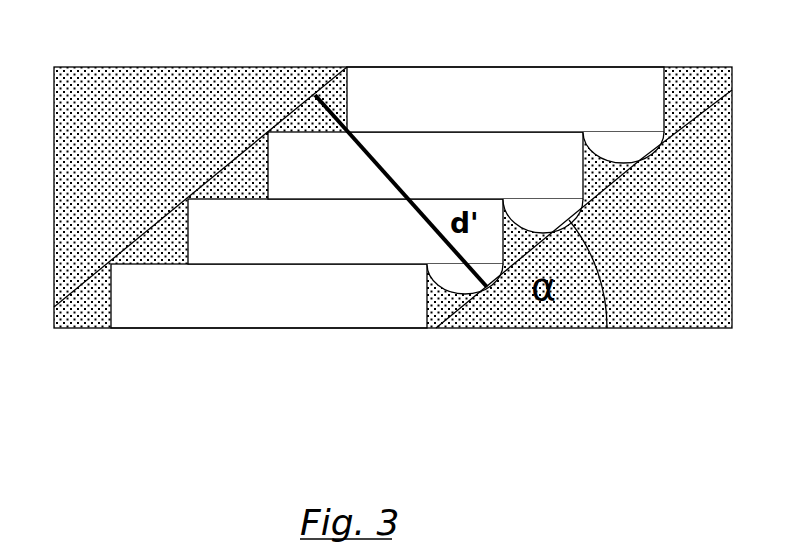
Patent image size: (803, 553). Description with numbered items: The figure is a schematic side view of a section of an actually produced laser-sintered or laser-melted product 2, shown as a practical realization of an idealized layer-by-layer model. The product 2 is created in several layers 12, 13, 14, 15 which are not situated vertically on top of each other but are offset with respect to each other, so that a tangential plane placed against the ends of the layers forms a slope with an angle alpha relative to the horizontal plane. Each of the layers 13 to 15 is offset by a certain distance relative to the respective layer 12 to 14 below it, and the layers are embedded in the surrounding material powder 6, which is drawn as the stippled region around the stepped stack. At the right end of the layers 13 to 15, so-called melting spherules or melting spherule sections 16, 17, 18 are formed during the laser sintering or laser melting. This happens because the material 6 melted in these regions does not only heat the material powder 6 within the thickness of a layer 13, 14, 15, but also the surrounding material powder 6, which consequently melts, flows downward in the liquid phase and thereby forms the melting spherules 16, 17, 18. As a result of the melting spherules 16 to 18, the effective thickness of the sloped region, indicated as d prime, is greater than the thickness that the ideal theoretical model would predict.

The product 2 is at (483, 65).
The material powder 6 is at (114, 140).
The layer 12 is at (150, 301).
The layer 13 is at (225, 235).
The layer 14 is at (308, 168).
The layer 15 is at (388, 104).
The melting spherule 16 is at (476, 286).
The melting spherule 17 is at (558, 220).
The melting spherule 18 is at (640, 155).